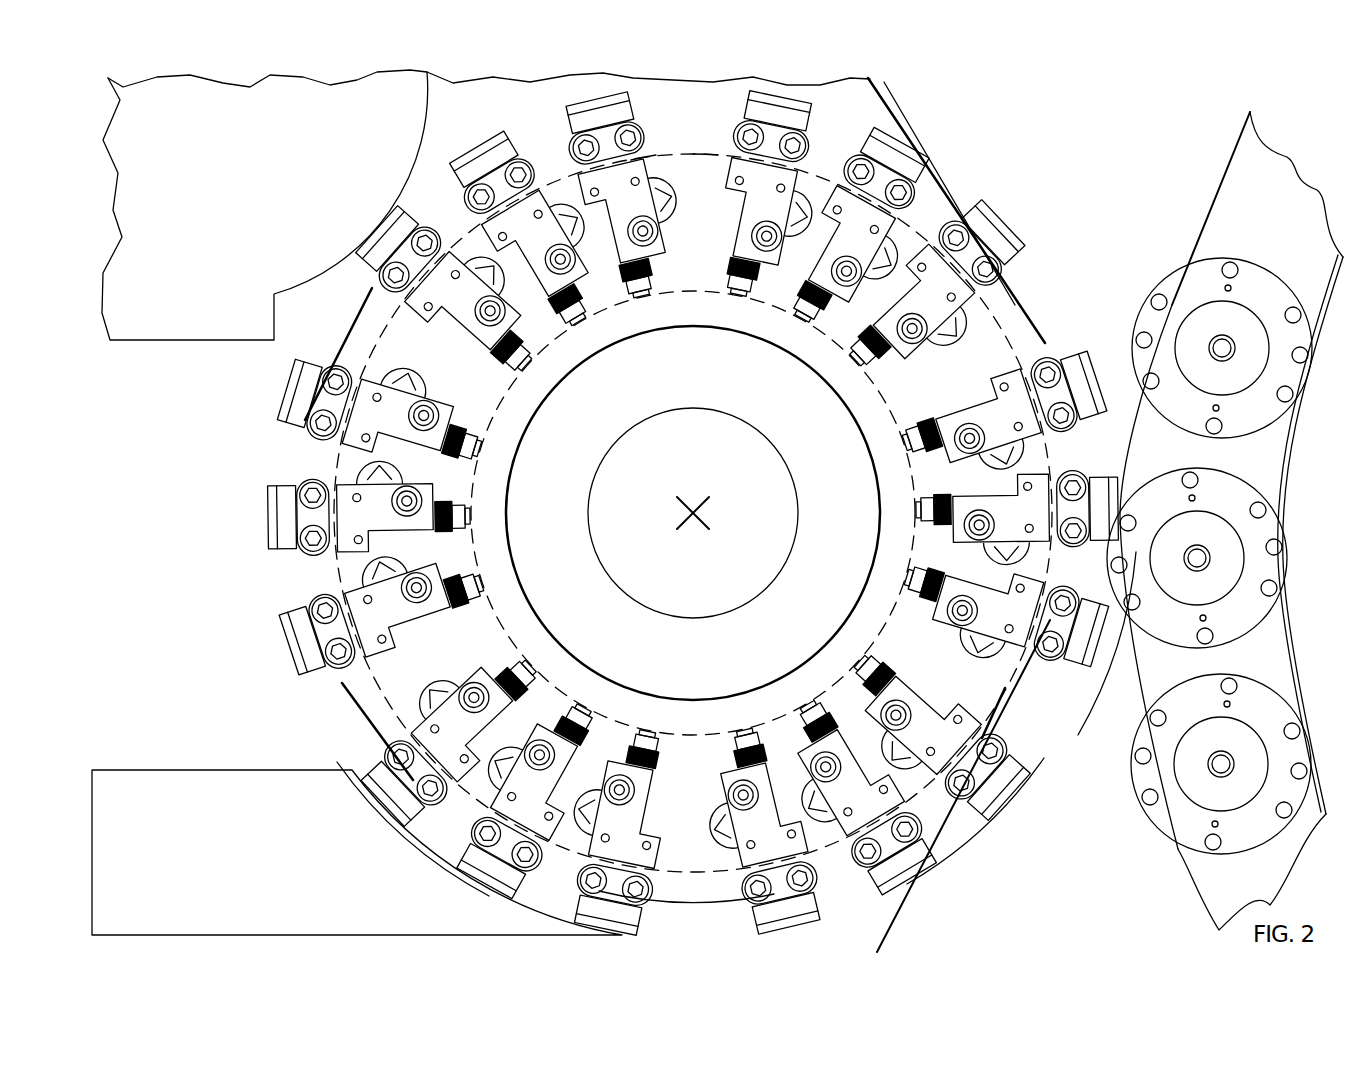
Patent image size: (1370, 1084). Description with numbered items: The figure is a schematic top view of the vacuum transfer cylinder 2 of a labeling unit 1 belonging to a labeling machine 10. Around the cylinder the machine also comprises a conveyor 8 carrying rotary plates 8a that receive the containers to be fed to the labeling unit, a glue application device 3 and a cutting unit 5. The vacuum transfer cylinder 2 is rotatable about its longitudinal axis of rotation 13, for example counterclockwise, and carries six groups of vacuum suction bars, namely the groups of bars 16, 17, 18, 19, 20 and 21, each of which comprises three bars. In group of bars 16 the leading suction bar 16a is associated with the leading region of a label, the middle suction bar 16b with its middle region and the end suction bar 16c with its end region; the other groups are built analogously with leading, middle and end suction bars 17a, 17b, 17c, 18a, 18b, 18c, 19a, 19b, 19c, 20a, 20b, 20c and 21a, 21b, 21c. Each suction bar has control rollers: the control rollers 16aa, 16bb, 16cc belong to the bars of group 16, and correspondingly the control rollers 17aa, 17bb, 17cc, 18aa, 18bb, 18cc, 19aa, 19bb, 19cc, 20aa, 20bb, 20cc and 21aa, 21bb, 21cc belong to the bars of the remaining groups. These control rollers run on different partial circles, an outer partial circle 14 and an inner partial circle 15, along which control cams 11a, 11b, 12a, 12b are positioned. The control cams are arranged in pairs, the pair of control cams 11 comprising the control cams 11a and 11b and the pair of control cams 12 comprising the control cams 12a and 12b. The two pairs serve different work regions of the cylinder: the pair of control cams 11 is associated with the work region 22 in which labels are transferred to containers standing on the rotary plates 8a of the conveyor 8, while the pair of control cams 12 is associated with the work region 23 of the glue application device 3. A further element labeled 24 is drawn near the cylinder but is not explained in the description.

The labeling unit 1 is at (982, 93).
The vacuum transfer cylinder 2 is at (720, 897).
The glue application device 3 is at (130, 770).
The cutting unit 5 is at (130, 323).
The conveyor 8 is at (1320, 533).
The rotary plates 8a is at (1277, 285).
The labeling machine 10 is at (1186, 116).
The pair of control cams 11 is at (1086, 700).
The control cam 11a is at (1008, 735).
The control cam 11b is at (1010, 715).
The pair of control cams 12 is at (264, 692).
The control cam 12a is at (397, 727).
The control cam 12b is at (400, 727).
The axis of rotation 13 is at (705, 510).
The outer partial circle 14 is at (656, 155).
The inner partial circle 15 is at (693, 155).
The group of bars 16 is at (1075, 250).
The leading suction bar 16a is at (1078, 348).
The middle suction bar 16b is at (1147, 667).
The end suction bar 16c is at (1150, 760).
The control roller 16aa is at (907, 442).
The control roller 16bb is at (918, 510).
The control roller 16cc is at (909, 578).
The group of bars 17 is at (1076, 797).
The leading suction bar 17a is at (995, 792).
The middle suction bar 17b is at (915, 868).
The end suction bar 17c is at (800, 912).
The control roller 17aa is at (861, 663).
The control roller 17bb is at (808, 706).
The control roller 17cc is at (745, 732).
The group of bars 18 is at (314, 797).
The leading suction bar 18a is at (590, 916).
The middle suction bar 18b is at (492, 888).
The end suction bar 18c is at (390, 795).
The control roller 18aa is at (647, 733).
The control roller 18bb is at (583, 709).
The control roller 18cc is at (529, 667).
The group of bars 19 is at (192, 438).
The leading suction bar 19a is at (285, 572).
The middle suction bar 19b is at (282, 518).
The end suction bar 19c is at (285, 435).
The control roller 19aa is at (479, 584).
The control roller 19bb is at (468, 516).
The control roller 19cc is at (477, 448).
The group of bars 20 is at (314, 97).
The leading suction bar 20a is at (392, 236).
The middle suction bar 20b is at (475, 160).
The end suction bar 20c is at (595, 112).
The control roller 20aa is at (525, 364).
The control roller 20bb is at (578, 322).
The control roller 20cc is at (641, 294).
The group of bars 21 is at (1076, 97).
The leading suction bar 21a is at (785, 100).
The middle suction bar 21b is at (905, 155).
The end suction bar 21c is at (995, 232).
The control roller 21aa is at (739, 294).
The control roller 21bb is at (803, 318).
The control roller 21cc is at (857, 360).
The work region 22 is at (1120, 640).
The work region 23 is at (688, 873).
The guide element 24 is at (347, 287).